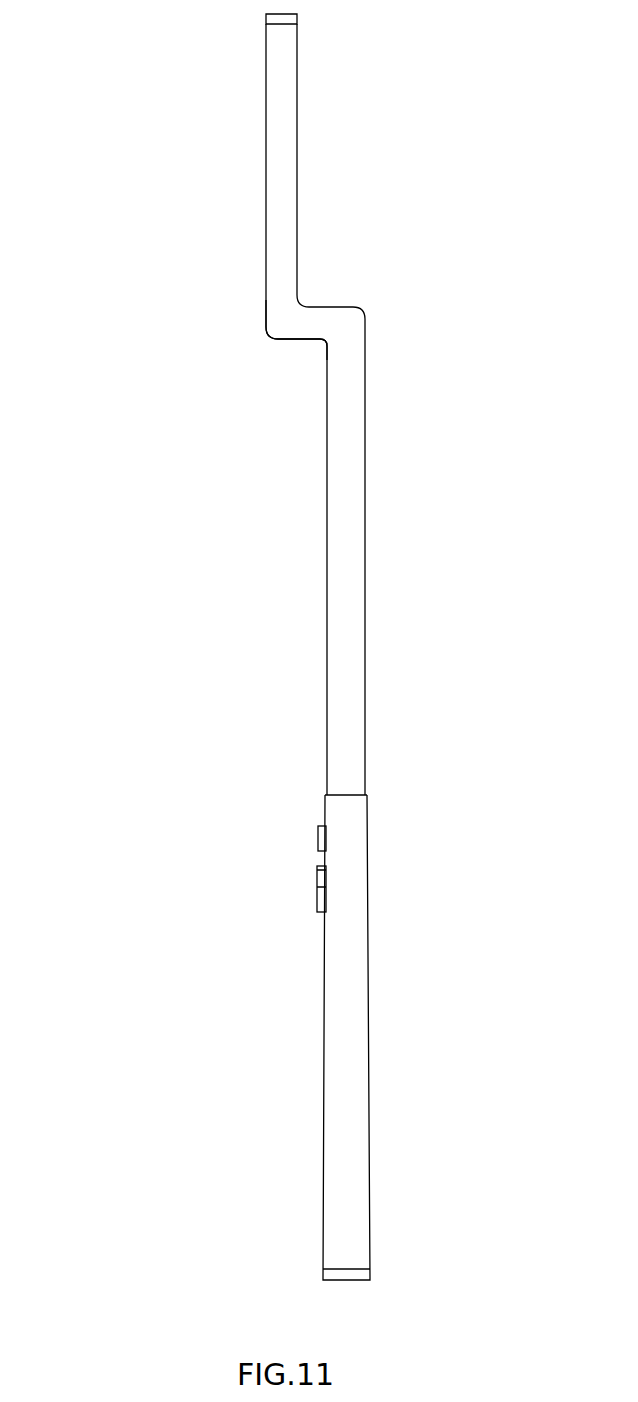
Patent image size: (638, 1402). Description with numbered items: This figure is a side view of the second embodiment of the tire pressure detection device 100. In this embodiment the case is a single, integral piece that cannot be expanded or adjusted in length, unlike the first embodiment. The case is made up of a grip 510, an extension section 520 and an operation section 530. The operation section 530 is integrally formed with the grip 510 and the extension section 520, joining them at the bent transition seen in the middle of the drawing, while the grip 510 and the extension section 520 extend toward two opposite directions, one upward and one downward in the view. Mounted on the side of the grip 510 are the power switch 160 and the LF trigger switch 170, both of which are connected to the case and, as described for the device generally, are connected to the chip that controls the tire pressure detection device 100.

The tire pressure detection device 100 is at (247, 1045).
The power switch 160 is at (318, 840).
The LF trigger switch 170 is at (317, 897).
The grip 510 is at (340, 1108).
The extension section 520 is at (279, 151).
The operation section 530 is at (306, 330).